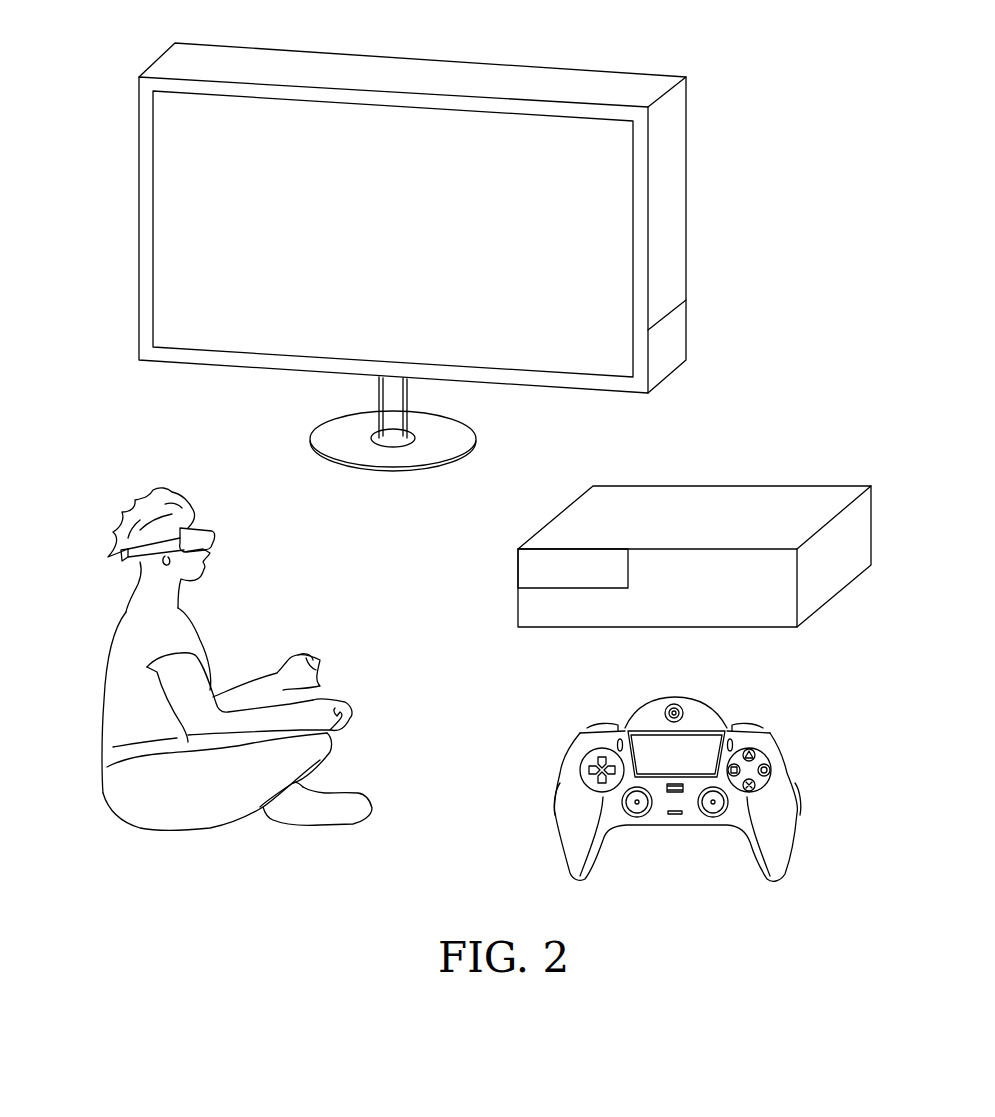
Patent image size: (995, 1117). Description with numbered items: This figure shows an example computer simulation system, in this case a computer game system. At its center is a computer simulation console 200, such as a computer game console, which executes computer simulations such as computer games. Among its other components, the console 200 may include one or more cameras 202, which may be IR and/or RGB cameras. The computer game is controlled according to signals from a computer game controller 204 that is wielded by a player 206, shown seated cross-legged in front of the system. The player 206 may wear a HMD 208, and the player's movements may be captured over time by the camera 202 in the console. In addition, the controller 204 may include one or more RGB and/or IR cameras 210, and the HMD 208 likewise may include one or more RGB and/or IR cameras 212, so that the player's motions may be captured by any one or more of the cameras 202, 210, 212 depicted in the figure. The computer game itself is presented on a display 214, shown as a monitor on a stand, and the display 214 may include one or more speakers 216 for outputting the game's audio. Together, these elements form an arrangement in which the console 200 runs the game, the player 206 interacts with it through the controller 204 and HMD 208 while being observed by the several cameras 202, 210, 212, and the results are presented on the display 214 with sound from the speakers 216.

The computer simulation console 200 is at (730, 486).
The camera 202 is at (518, 570).
The computer game controller 204 is at (797, 800).
The player 206 is at (102, 688).
The HMD 208 is at (110, 553).
The camera 210 is at (675, 702).
The camera 212 is at (213, 540).
The display 214 is at (422, 108).
The speaker 216 is at (680, 343).